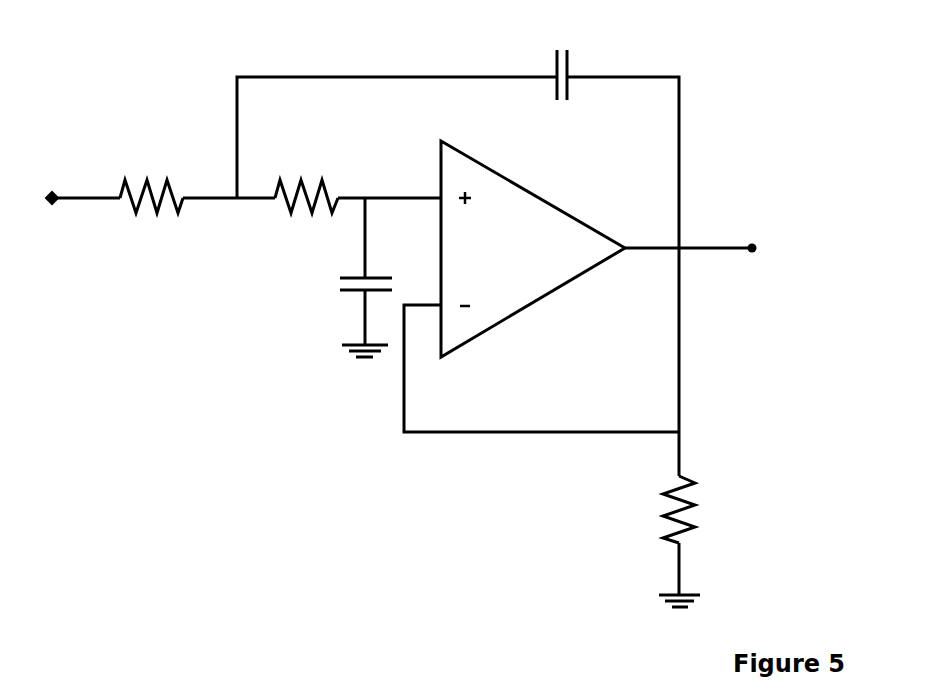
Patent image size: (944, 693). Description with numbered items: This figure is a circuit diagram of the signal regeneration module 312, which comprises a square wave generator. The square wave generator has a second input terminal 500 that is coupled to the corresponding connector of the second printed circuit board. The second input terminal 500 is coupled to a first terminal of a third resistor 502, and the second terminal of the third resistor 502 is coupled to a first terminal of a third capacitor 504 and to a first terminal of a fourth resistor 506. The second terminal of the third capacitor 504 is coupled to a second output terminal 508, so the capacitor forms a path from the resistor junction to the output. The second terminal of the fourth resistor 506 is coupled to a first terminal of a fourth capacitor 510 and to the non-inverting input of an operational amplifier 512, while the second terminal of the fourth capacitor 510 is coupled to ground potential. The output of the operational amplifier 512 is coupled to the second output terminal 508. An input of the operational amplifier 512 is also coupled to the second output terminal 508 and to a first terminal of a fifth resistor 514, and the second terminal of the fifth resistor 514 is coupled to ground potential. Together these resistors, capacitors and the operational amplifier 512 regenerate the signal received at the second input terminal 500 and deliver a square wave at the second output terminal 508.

The second input terminal 500 is at (55, 194).
The third resistor 502 is at (135, 208).
The third capacitor 504 is at (557, 60).
The fourth resistor 506 is at (302, 208).
The second output terminal 508 is at (754, 251).
The fourth capacitor 510 is at (346, 291).
The operational amplifier 512 is at (533, 249).
The fifth resistor 514 is at (663, 518).
The signal regeneration module 312 is at (267, 541).